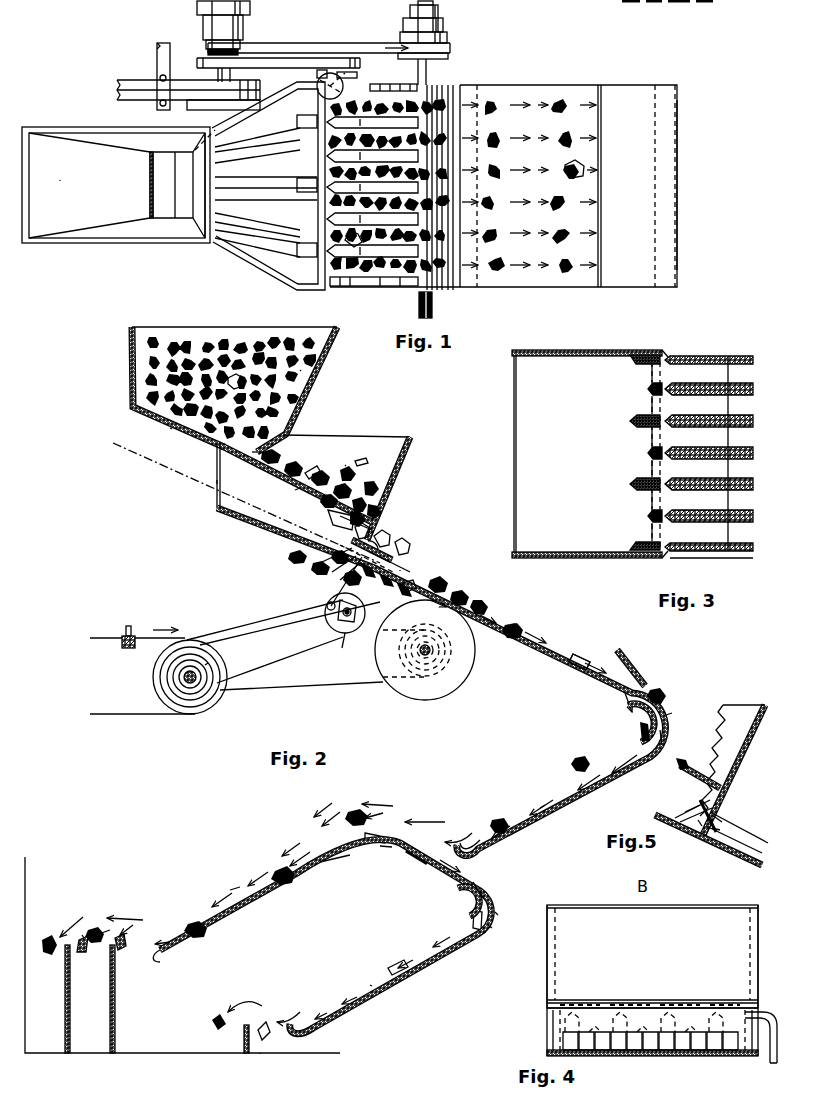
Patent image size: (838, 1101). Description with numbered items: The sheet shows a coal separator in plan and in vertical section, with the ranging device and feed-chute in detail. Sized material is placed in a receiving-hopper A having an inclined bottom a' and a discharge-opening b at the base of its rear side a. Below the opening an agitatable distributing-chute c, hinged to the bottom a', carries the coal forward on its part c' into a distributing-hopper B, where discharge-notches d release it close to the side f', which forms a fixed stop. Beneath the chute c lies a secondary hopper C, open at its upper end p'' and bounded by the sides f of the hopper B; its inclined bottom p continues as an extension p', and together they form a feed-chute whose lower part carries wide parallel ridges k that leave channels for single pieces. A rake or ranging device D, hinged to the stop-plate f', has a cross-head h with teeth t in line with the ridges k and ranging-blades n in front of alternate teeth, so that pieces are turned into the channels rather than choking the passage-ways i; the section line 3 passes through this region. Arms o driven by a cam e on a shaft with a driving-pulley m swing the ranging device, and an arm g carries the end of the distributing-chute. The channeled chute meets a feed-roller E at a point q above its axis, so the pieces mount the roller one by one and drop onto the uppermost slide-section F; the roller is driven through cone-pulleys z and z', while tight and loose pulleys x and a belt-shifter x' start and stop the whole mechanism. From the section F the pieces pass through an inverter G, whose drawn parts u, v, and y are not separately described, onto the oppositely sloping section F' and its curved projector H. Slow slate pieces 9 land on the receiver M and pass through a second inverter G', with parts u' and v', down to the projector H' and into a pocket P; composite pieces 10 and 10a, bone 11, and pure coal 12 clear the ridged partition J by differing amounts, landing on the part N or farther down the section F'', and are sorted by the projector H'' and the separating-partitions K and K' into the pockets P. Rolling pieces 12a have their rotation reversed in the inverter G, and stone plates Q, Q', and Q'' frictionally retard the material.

In FIG. 1, the receiving-hopper A is at (118, 201).
In FIG. 2, the receiving-hopper A is at (234, 381).
In FIG. 1, the distributing bin or hopper B is at (268, 188).
In FIG. 2, the distributing bin or hopper B is at (316, 478).
In FIG. 2, the secondary distributing-hopper C is at (294, 514).
In FIG. 3, the rake or ranging device D is at (662, 372).
In FIG. 2, the rake or ranging device D is at (375, 550).
In FIG. 5, the rake or ranging device D is at (722, 808).
In FIG. 4, the rake or ranging device D is at (556, 1026).
In FIG. 1, the feed-roller E is at (436, 201).
In FIG. 2, the feed-roller E is at (425, 650).
In FIG. 1, the uppermost slide-section F is at (503, 200).
In FIG. 2, the uppermost slide-section F is at (518, 711).
In FIG. 2, the slide-section F' is at (543, 795).
In FIG. 2, the slide-section F'' is at (235, 882).
In FIG. 1, the inverter G is at (663, 200).
In FIG. 2, the inverter G is at (680, 702).
In FIG. 2, the inverter G' is at (509, 893).
In FIG. 2, the curved projector H is at (455, 829).
In FIG. 2, the projector H' is at (267, 1016).
In FIG. 2, the projector H'' is at (118, 933).
In FIG. 2, the ridged separating-partition J is at (386, 861).
In FIG. 2, the separating-partition K is at (103, 999).
In FIG. 2, the separating-partition K' is at (58, 999).
In FIG. 2, the receiver M is at (446, 878).
In FIG. 2, the part of slide-section F'' N is at (341, 871).
In FIG. 2, the pockets P is at (182, 955).
In FIG. 2, the stone plate Q is at (564, 796).
In FIG. 2, the stone plate Q' is at (322, 913).
In FIG. 2, the stone plate Q'' is at (395, 978).
In FIG. 1, the rear side of hopper a is at (200, 185).
In FIG. 2, the rear side of hopper a is at (305, 361).
In FIG. 1, the inclined bottom a' is at (93, 185).
In FIG. 2, the inclined bottom a' is at (163, 437).
In FIG. 1, the discharge-opening b is at (180, 185).
In FIG. 2, the discharge-opening b is at (252, 448).
In FIG. 1, the distributing-chute c is at (157, 185).
In FIG. 2, the distributing-chute c is at (231, 448).
In FIG. 1, the forward part of distributing-chute c' is at (266, 187).
In FIG. 2, the forward part of distributing-chute c' is at (292, 492).
In FIG. 1, the discharge-notches d is at (307, 186).
In FIG. 2, the discharge-notches d is at (356, 513).
In FIG. 5, the discharge-notches d is at (668, 768).
In FIG. 2, the cam e is at (333, 628).
In FIG. 1, the sides of distributing-hopper f is at (257, 188).
In FIG. 2, the sides of distributing-hopper f is at (344, 457).
In FIG. 5, the sides of distributing-hopper f is at (713, 760).
In FIG. 4, the sides of distributing-hopper f is at (651, 956).
In FIG. 2, the stop-plate f' is at (399, 475).
In FIG. 5, the stop-plate f' is at (733, 771).
In FIG. 4, the stop-plate f' is at (652, 956).
In FIG. 2, the arm g is at (334, 518).
In FIG. 2, the cross-head h is at (372, 540).
In FIG. 5, the cross-head h is at (720, 816).
In FIG. 4, the cross-head h is at (644, 1022).
In FIG. 3, the passage-ways i is at (648, 453).
In FIG. 2, the passage-ways i is at (340, 580).
In FIG. 5, the passage-ways i is at (724, 825).
In FIG. 4, the passage-ways i is at (650, 1041).
In FIG. 1, the ridges k is at (372, 187).
In FIG. 3, the ridges k is at (716, 453).
In FIG. 2, the ridges k is at (390, 562).
In FIG. 5, the ridges k is at (737, 833).
In FIG. 1, the driving-pulley m is at (323, 62).
In FIG. 2, the driving-pulley m is at (336, 649).
In FIG. 3, the ranging-blade n is at (630, 359).
In FIG. 2, the ranging-blade n is at (325, 563).
In FIG. 5, the ranging-blade n is at (692, 806).
In FIG. 1, the arms o is at (337, 84).
In FIG. 2, the arms o is at (352, 599).
In FIG. 4, the arms o is at (761, 1032).
In FIG. 3, the inclined bottom of secondary hopper p is at (590, 454).
In FIG. 2, the inclined bottom of secondary hopper p is at (275, 527).
In FIG. 5, the inclined bottom of secondary hopper p is at (701, 837).
In FIG. 4, the inclined bottom of secondary hopper p is at (652, 1062).
In FIG. 1, the feed-chute extension p' is at (374, 195).
In FIG. 3, the feed-chute extension p' is at (711, 569).
In FIG. 2, the upper end of secondary hopper p'' is at (207, 475).
In FIG. 2, the meeting point q is at (420, 612).
In FIG. 3, the teeth t is at (649, 453).
In FIG. 2, the teeth t is at (332, 572).
In FIG. 5, the teeth t is at (699, 821).
In FIG. 4, the teeth t is at (650, 1041).
In FIG. 2, the inner guide u is at (638, 723).
In FIG. 2, the inner guide u' is at (463, 901).
In FIG. 1, the outer wall v is at (686, 185).
In FIG. 2, the outer wall v is at (669, 737).
In FIG. 2, the outer wall v' is at (499, 917).
In FIG. 1, the tight and loose pulleys x is at (193, 88).
In FIG. 2, the tight and loose pulleys x is at (236, 662).
In FIG. 1, the belt-shifter x' is at (154, 76).
In FIG. 2, the belt-shifter x' is at (139, 645).
In FIG. 1, the deflector y is at (637, 199).
In FIG. 2, the deflector y is at (631, 668).
In FIG. 1, the cone-pulley z is at (228, 28).
In FIG. 2, the cone-pulley z is at (213, 668).
In FIG. 1, the cone-pulley z' is at (430, 43).
In FIG. 2, the cone-pulley z' is at (418, 650).
In FIG. 2, the section line 3 is at (462, 570).
In FIG. 2, the pieces of pure slate 9 is at (262, 1042).
In FIG. 2, the composite piece of coal and slate 10 is at (580, 657).
In FIG. 2, the composite piece 10a is at (410, 585).
In FIG. 2, the pieces of bone 11 is at (82, 935).
In FIG. 2, the pure coal 12 is at (580, 772).
In FIG. 2, the rolling piece of bone or coal 12a is at (516, 625).